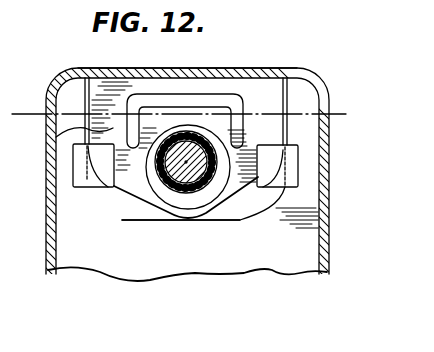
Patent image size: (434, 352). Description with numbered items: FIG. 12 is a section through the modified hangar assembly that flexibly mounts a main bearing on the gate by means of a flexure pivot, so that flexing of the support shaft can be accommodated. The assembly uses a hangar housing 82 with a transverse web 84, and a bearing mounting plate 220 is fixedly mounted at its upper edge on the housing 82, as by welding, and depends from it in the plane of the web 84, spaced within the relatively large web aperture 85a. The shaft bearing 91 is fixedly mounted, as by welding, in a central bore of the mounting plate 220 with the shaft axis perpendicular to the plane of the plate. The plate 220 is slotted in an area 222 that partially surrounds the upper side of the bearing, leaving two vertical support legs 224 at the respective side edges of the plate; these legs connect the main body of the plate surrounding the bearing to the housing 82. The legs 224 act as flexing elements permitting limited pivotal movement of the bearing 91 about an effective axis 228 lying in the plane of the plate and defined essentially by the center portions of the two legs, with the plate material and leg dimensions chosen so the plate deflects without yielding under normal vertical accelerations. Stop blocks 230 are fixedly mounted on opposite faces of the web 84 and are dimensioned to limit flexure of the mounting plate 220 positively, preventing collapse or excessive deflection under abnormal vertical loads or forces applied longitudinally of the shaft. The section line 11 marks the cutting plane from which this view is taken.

The section line 11- 11 is at (262, 43).
The housing 82 is at (184, 70).
The transverse web 84 is at (217, 170).
The web aperture 85a is at (233, 214).
The shaft bearing 91 is at (166, 191).
The bearing mounting plate 220 is at (124, 199).
The slotted area 222 is at (157, 108).
The vertical support legs 224 is at (262, 131).
The effective axis 228 is at (33, 116).
The stop blocks 230 is at (290, 173).